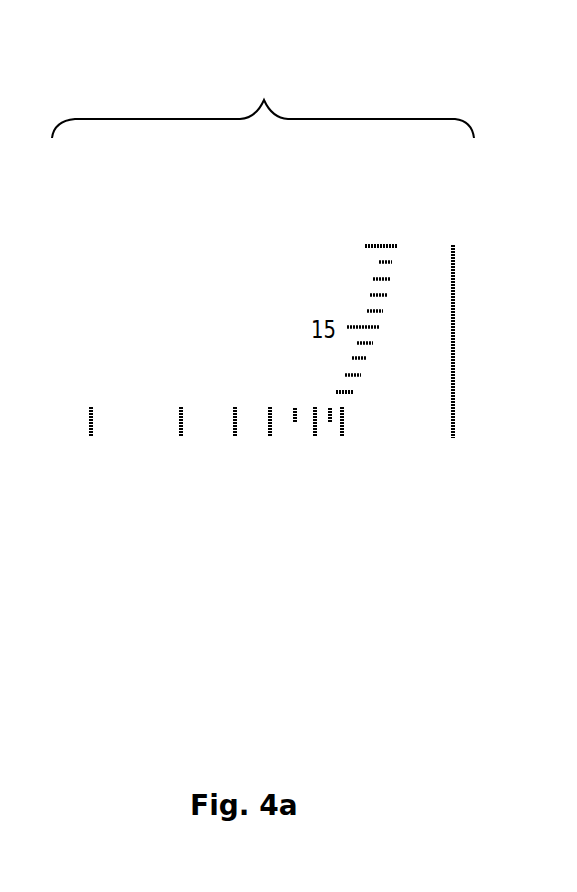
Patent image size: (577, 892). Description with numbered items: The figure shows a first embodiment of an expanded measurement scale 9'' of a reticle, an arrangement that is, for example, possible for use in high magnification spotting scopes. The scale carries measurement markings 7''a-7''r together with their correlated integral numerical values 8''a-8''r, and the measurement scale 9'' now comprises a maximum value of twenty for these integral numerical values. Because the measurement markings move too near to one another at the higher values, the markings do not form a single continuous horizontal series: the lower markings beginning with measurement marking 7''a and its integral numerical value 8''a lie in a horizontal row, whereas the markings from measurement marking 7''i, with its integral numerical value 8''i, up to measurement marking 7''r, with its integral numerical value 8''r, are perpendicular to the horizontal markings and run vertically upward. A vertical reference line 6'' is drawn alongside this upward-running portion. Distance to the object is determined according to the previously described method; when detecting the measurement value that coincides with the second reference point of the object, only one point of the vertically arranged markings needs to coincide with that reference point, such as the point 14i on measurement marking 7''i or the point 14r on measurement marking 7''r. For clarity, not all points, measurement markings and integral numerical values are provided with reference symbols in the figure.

The expanded measurement scale 9'' is at (263, 105).
The measurement marking 7''r is at (378, 203).
The point of measurement marking 14r is at (397, 246).
The integral numerical value 8''r is at (275, 248).
The vertical reference bar 6'' is at (504, 341).
The measurement marking 7''i is at (300, 356).
The point of measurement marking 14i is at (353, 392).
The integral numerical value 8''i is at (264, 425).
The measurement marking 7''a is at (75, 377).
The integral numerical value 8''a is at (107, 532).